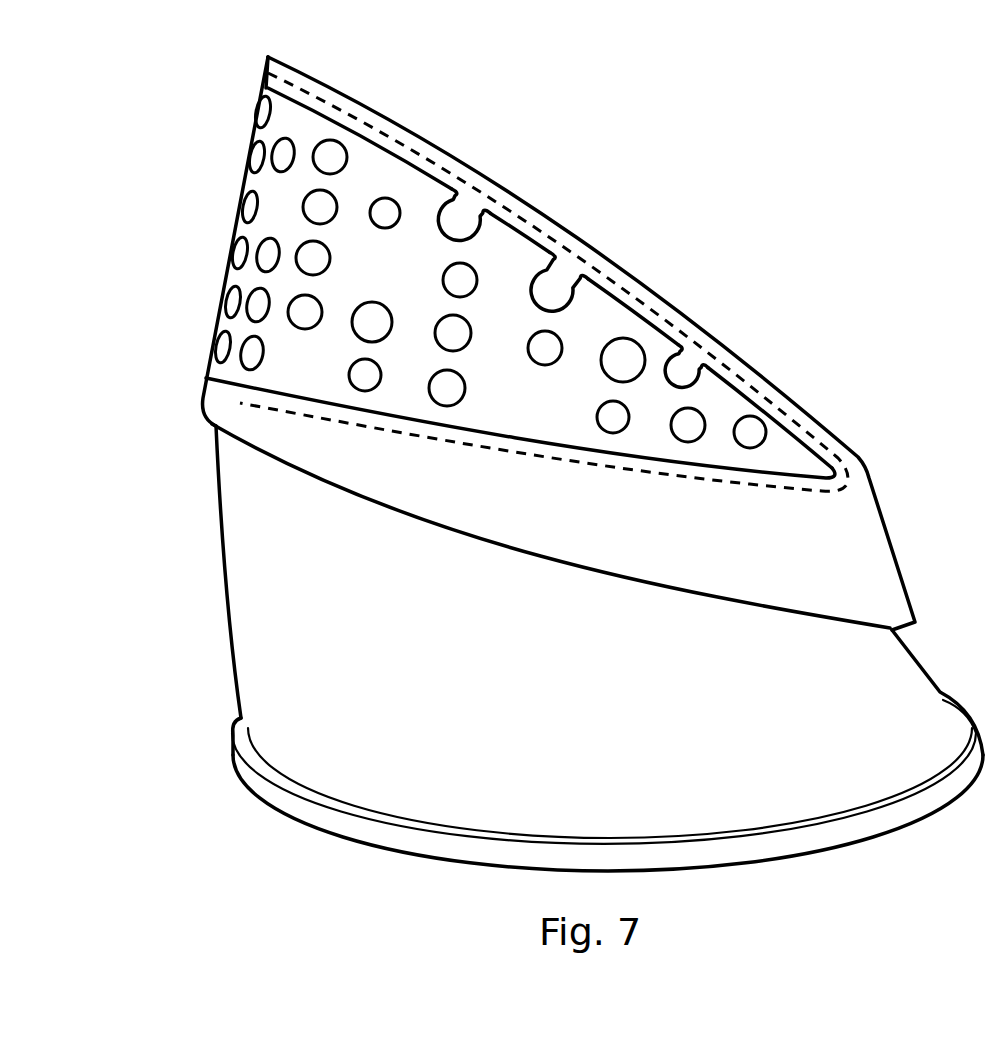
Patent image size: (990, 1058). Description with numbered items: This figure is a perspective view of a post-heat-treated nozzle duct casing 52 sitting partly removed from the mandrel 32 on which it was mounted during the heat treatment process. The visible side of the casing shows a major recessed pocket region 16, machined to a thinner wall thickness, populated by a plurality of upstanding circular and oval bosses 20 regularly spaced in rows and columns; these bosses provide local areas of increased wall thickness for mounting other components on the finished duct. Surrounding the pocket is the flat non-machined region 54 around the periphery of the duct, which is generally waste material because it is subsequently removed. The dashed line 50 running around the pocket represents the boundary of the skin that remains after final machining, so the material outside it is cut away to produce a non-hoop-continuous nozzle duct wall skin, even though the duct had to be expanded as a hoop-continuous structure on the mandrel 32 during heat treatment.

The nozzle duct casing 52 is at (886, 380).
The dashed line 50 is at (437, 153).
The recessed pocket region 16 is at (550, 418).
The bosses 20 is at (624, 360).
The flat non-machined region 54 is at (722, 557).
The mandrel 32 is at (263, 627).